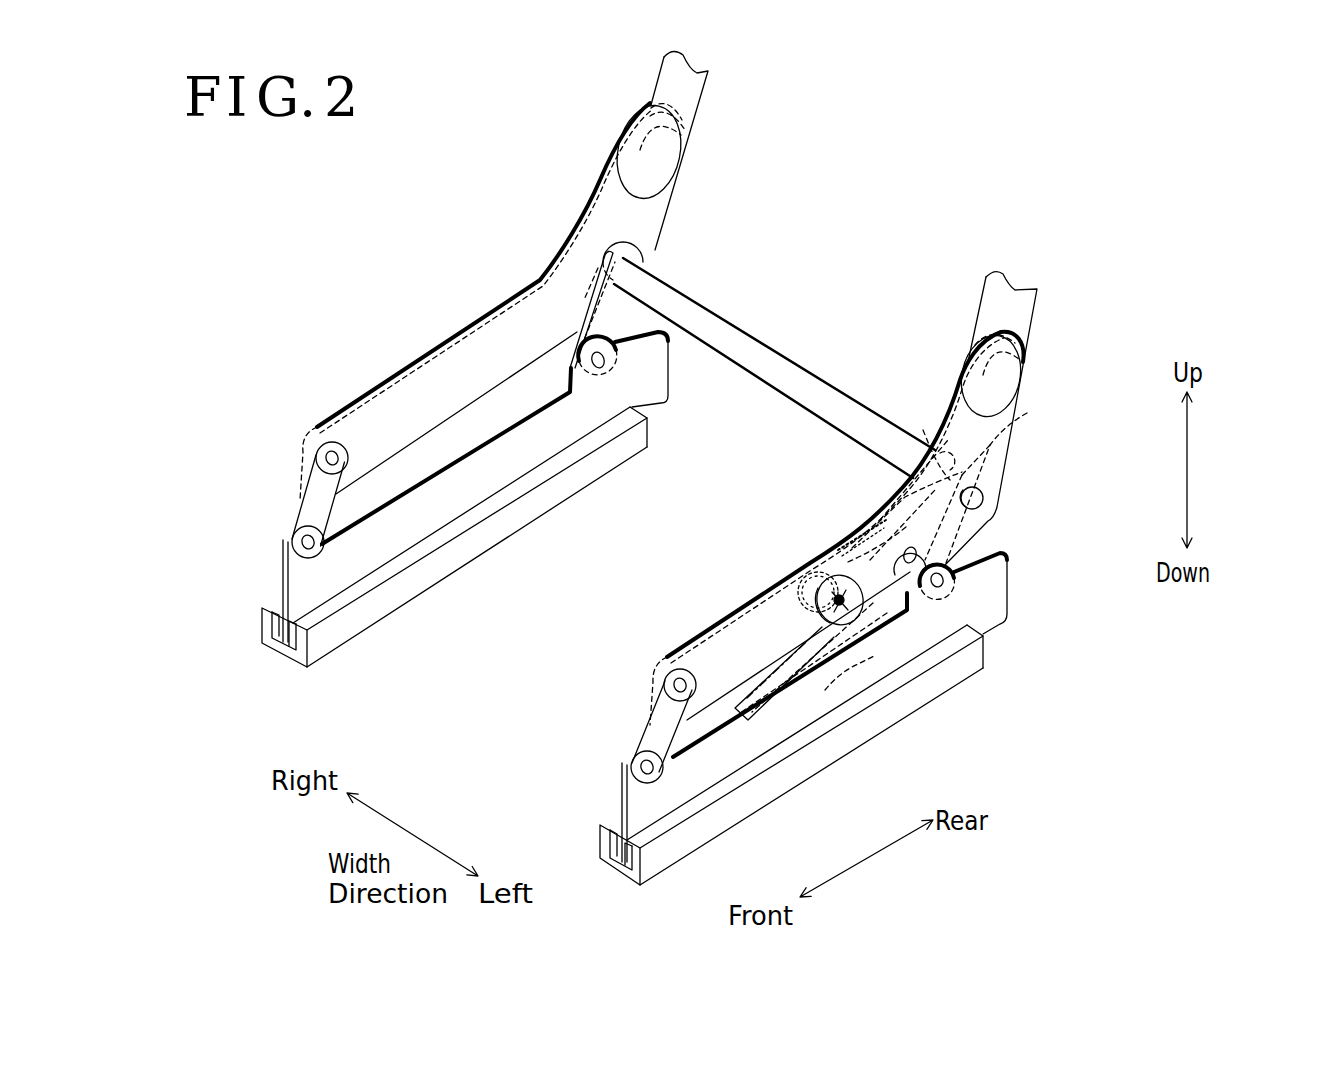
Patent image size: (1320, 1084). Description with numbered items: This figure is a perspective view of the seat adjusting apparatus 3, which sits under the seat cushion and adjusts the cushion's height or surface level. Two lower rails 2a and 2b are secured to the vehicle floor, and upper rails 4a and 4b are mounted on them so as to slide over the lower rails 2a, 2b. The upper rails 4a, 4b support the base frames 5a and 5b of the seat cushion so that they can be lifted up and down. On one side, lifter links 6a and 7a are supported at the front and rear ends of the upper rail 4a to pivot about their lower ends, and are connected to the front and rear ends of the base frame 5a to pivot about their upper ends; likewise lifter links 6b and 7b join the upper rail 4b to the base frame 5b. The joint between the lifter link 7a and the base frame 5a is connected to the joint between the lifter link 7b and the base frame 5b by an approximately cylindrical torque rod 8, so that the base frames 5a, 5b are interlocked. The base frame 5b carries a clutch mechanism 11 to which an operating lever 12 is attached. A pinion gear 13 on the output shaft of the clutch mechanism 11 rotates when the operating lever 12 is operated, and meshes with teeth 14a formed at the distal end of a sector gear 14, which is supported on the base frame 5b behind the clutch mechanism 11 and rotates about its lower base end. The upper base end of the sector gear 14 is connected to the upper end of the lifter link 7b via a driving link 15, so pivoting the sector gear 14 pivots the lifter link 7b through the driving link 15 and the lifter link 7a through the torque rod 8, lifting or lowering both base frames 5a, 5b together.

The lower rail 2a is at (262, 628).
The lower rail 2b is at (600, 851).
The seat adjusting apparatus 3 is at (1095, 339).
The upper rail 4a is at (281, 578).
The upper rail 4b is at (620, 802).
The base frame 5a is at (318, 436).
The base frame 5b is at (665, 662).
The lifter link 6a is at (298, 513).
The lifter link 6b is at (648, 729).
The lifter link 7a is at (594, 322).
The lifter link 7b is at (1018, 424).
The torque rod 8 is at (783, 358).
The clutch mechanism 11 is at (802, 615).
The operating lever 12 is at (836, 668).
The pinion gear 13 is at (798, 578).
The sector gear 14 is at (874, 512).
The teeth 14a is at (844, 545).
The driving link 15 is at (928, 440).